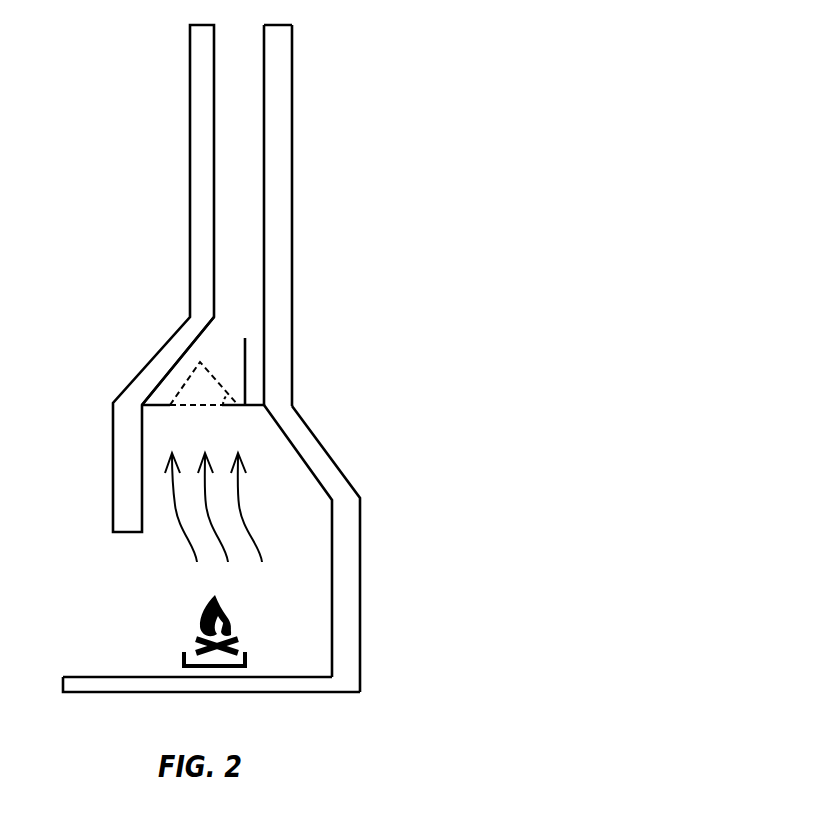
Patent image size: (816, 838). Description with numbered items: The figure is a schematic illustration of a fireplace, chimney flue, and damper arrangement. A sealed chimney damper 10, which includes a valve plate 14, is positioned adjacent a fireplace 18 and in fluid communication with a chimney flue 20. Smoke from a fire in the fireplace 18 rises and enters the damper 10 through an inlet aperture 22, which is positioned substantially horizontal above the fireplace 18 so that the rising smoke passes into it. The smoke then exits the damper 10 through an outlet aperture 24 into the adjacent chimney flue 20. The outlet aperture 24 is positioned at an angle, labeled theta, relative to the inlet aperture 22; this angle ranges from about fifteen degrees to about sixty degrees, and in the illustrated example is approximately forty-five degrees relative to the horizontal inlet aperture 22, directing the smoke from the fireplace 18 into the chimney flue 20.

The sealed chimney damper 10 is at (196, 378).
The valve plate 14 is at (247, 355).
The fireplace 18 is at (263, 498).
The chimney flue 20 is at (243, 262).
The inlet aperture 22 is at (190, 404).
The outlet aperture 24 is at (215, 368).